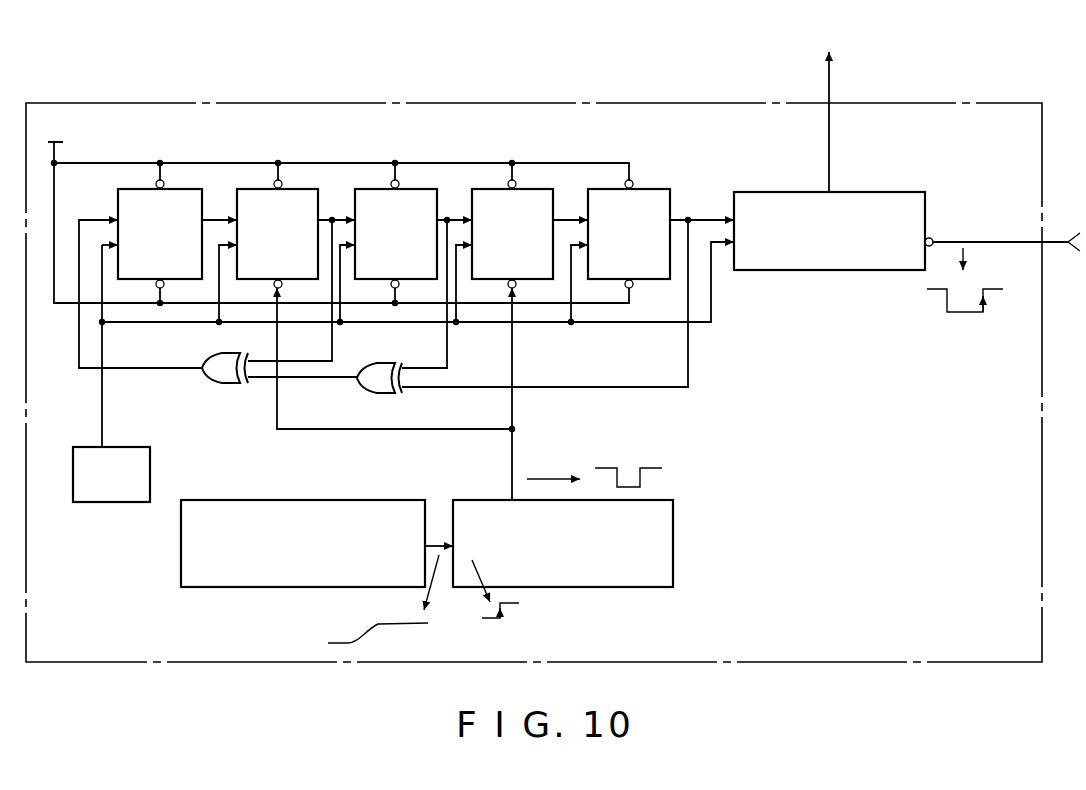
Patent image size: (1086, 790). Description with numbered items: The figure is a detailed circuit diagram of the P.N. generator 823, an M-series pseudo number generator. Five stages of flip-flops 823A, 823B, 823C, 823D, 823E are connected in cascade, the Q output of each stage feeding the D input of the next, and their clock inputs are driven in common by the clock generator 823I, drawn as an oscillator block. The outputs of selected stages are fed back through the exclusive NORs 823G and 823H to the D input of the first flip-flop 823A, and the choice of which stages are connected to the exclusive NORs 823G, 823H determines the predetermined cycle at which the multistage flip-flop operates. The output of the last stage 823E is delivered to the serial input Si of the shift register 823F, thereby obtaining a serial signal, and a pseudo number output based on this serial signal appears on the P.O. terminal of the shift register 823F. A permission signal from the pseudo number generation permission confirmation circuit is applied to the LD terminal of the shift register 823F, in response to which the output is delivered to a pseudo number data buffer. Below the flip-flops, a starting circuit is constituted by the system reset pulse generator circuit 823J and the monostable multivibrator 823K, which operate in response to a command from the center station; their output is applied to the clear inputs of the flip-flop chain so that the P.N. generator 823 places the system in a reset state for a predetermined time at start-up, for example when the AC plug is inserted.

The P.N. generator 823 is at (418, 103).
The flip-flop 823A is at (190, 187).
The flip-flop 823B is at (304, 187).
The flip-flop 823C is at (422, 187).
The flip-flop 823D is at (542, 187).
The flip-flop 823E is at (660, 188).
The shift register 823F is at (883, 192).
The exclusive NOR 823G is at (222, 385).
The exclusive NOR 823H is at (378, 396).
The clock generator 823I is at (108, 504).
The system reset pulse generator circuit 823J is at (288, 498).
The monostable multivibrator 823K is at (473, 499).